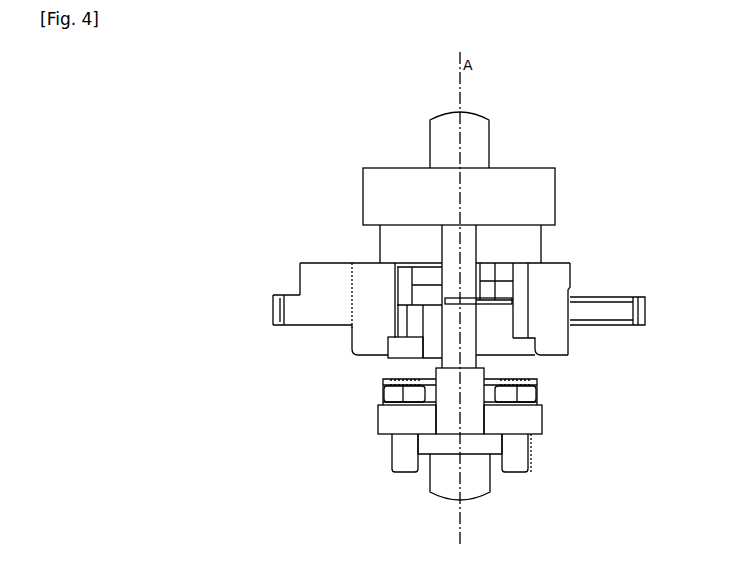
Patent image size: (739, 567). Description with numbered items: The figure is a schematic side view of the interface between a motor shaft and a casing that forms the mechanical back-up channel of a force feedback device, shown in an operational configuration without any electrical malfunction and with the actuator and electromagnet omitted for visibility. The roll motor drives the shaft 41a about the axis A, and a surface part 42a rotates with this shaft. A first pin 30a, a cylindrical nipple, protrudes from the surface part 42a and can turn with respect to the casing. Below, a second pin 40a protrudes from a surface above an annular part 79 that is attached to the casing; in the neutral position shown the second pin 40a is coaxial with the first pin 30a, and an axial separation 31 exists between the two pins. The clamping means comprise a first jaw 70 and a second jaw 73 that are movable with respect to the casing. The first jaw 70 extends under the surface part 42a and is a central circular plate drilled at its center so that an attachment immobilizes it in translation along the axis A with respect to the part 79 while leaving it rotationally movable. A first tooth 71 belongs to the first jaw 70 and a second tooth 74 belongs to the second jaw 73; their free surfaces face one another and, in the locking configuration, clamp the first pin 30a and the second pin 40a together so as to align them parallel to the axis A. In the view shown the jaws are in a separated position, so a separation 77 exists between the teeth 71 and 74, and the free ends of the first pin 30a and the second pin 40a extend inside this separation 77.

The shaft 41a is at (494, 134).
The surface part 42a is at (551, 185).
The first jaw 70 is at (546, 233).
The first pin 30a is at (433, 232).
The second pin 40a is at (436, 344).
The second tooth 74 is at (459, 309).
The first tooth 71 is at (518, 270).
The separation 77 is at (507, 281).
The axial separation 31 is at (483, 296).
The second jaw 73 is at (537, 364).
The annular part 79 is at (553, 427).